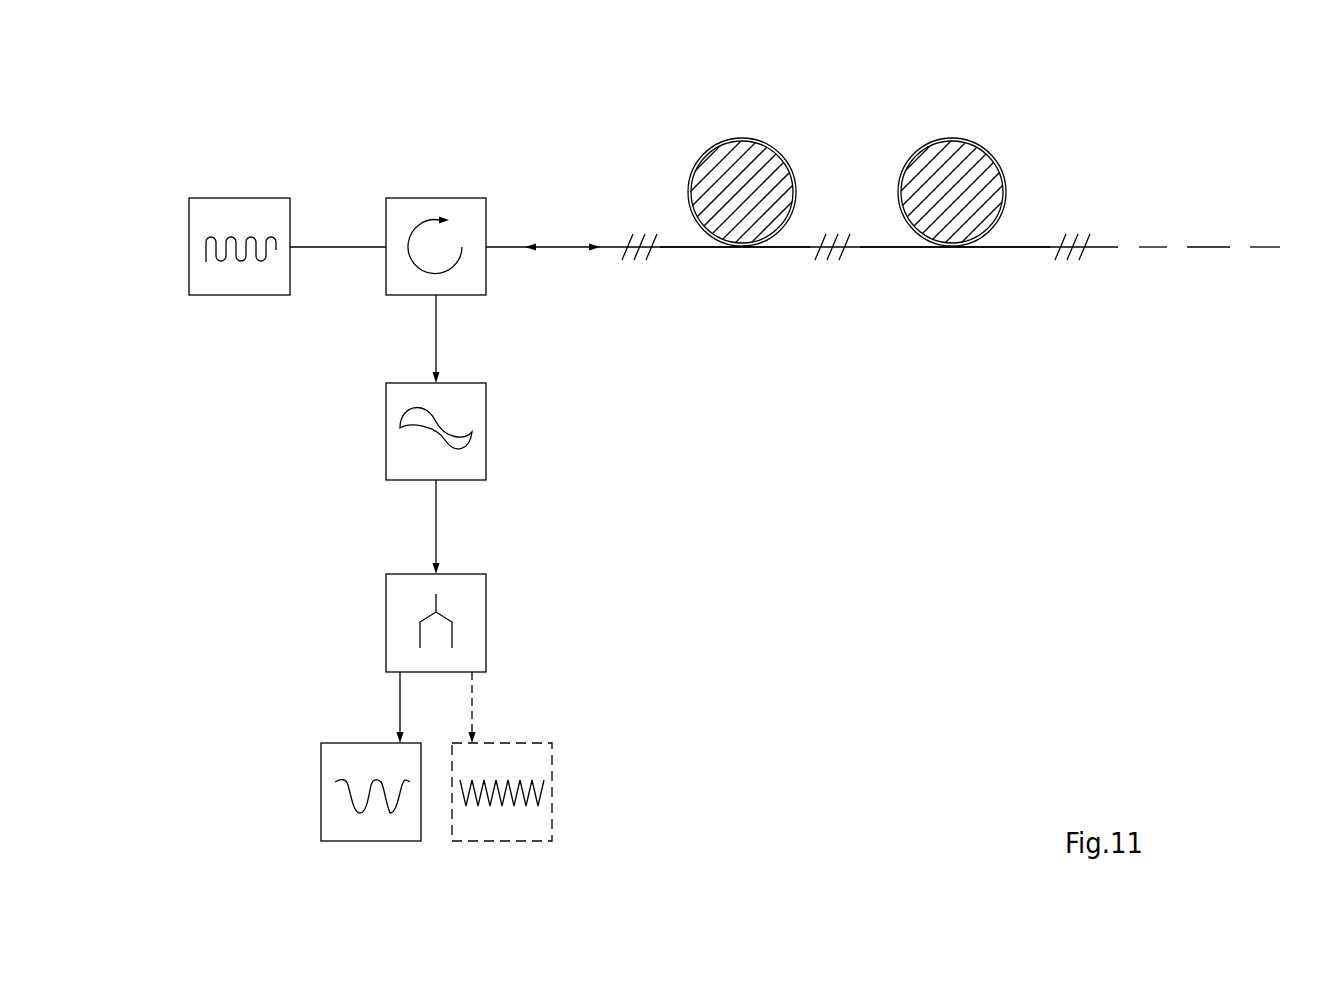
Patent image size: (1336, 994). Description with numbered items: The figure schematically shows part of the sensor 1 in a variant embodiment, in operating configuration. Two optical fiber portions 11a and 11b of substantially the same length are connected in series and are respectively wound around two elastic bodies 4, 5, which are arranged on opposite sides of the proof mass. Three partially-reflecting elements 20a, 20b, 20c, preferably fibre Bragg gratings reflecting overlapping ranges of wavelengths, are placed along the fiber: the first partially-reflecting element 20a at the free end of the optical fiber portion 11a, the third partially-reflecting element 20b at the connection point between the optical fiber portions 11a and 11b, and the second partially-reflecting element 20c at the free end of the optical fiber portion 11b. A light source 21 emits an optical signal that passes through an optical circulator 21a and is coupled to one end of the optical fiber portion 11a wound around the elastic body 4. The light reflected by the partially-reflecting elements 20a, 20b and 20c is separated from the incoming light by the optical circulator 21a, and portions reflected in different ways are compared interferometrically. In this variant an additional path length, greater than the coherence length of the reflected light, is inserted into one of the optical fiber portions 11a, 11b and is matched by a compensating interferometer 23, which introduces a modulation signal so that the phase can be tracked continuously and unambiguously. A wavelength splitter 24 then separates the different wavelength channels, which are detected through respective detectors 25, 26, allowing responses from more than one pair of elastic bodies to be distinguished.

The measuring system 1 is at (1209, 81).
The elastic body 4 is at (735, 185).
The elastic body 5 is at (947, 183).
The optical fiber portion 11a is at (784, 262).
The optical fiber portion 11b is at (1022, 259).
The partially-reflecting element 20a is at (630, 283).
The partially-reflecting element 20b is at (846, 281).
The partially-reflecting element 20c is at (1085, 281).
The light source 21 is at (240, 198).
The optical circulator 21a is at (442, 208).
The compensating interferometer 23 is at (386, 432).
The wavelength splitter 24 is at (386, 624).
The detector 25 is at (370, 841).
The detector 26 is at (500, 841).